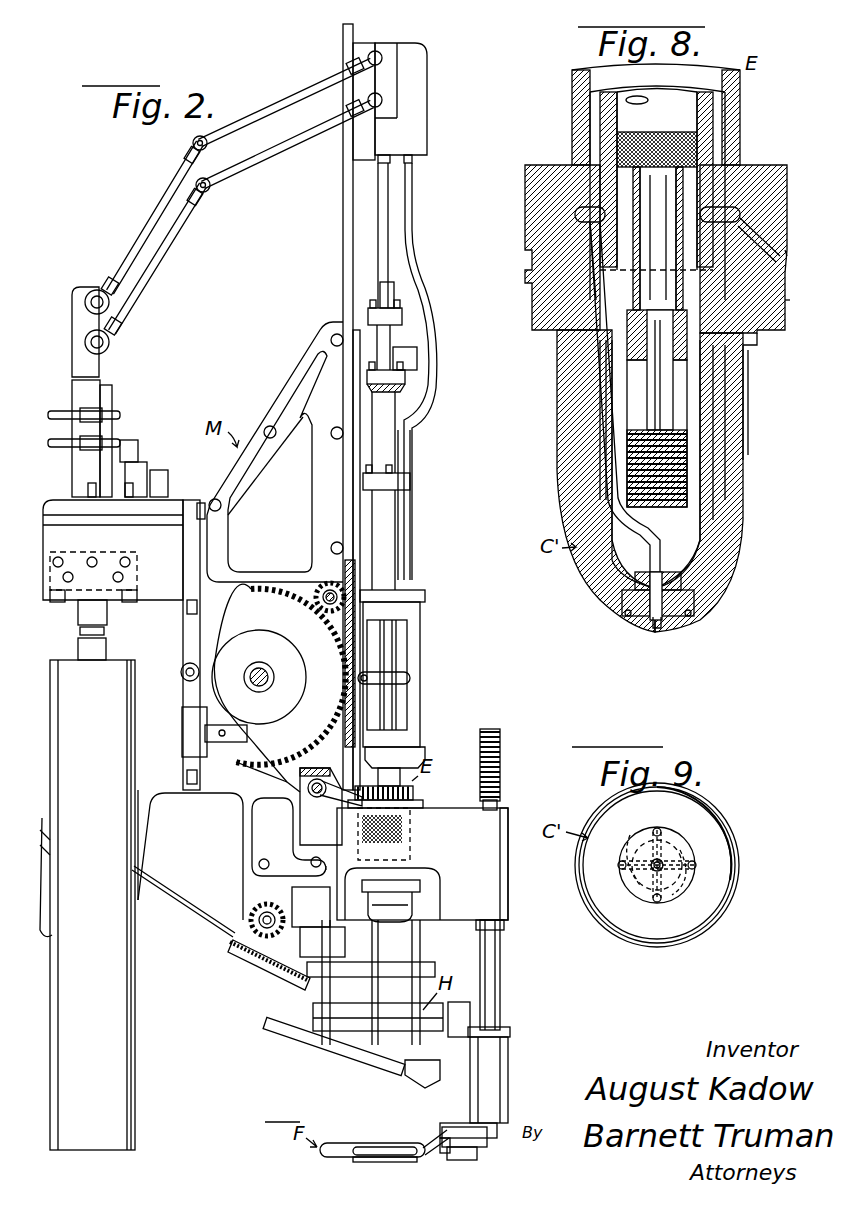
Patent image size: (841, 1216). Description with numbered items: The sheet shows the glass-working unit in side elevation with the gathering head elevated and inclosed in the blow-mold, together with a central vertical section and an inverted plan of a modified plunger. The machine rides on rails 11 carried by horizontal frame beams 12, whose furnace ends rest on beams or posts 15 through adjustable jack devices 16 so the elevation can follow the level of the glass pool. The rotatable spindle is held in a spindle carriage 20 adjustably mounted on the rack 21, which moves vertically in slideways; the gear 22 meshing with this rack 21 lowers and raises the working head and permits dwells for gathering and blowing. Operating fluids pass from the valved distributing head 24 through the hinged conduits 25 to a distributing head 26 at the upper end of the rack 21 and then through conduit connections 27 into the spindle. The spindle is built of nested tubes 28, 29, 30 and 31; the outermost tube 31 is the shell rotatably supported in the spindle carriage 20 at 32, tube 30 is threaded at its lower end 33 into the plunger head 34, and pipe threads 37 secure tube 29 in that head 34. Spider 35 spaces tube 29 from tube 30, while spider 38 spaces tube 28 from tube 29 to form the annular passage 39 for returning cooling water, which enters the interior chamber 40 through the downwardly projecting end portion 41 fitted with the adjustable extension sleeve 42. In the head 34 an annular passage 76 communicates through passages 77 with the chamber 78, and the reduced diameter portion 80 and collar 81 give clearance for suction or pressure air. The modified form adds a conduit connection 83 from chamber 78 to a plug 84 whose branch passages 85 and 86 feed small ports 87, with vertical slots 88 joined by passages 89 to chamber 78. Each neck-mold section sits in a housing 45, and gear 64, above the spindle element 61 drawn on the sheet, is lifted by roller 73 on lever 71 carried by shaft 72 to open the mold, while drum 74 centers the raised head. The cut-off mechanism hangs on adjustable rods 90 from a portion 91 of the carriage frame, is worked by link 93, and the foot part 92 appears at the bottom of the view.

In FIG. 2, the rails 11 is at (58, 500).
In FIG. 2, the horizontal frame beams 12 is at (170, 593).
In FIG. 2, the beams or posts 15 is at (124, 1083).
In FIG. 2, the adjustable jack devices 16 is at (78, 640).
In FIG. 2, the spindle carriage 20 is at (420, 700).
In FIG. 2, the rack 21 is at (343, 265).
In FIG. 2, the gear 22 is at (258, 595).
In FIG. 2, the valved distributing head 24 is at (100, 368).
In FIG. 2, the hinged conduits 25 is at (229, 206).
In FIG. 2, the distributing head 26 is at (428, 145).
In FIG. 2, the conduit connections 27 is at (420, 256).
In FIG. 8, the innermost tube 28 is at (640, 96).
In FIG. 8, the tube 29 is at (659, 72).
In FIG. 8, the tube 30 is at (742, 72).
In FIG. 2, the outermost tube 31 is at (400, 643).
In FIG. 2, the rotatable support 32 is at (415, 749).
In FIG. 8, the threaded lower end 33 is at (575, 181).
In FIG. 8, the plunger head 34 is at (760, 188).
In FIG. 8, the spider 35 is at (722, 100).
In FIG. 8, the pipe threads 37 is at (605, 230).
In FIG. 8, the spider 38 is at (700, 140).
In FIG. 8, the annular passage 39 is at (715, 118).
In FIG. 8, the interior chamber 40 is at (705, 540).
In FIG. 8, the downwardly projecting end portion 41 is at (683, 327).
In FIG. 8, the adjustable extension sleeve 42 is at (690, 505).
In FIG. 2, the cage or housing 45 is at (377, 913).
In FIG. 2, the gear 61 is at (414, 789).
In FIG. 2, the gear 64 is at (430, 800).
In FIG. 2, the lever 71 is at (328, 803).
In FIG. 2, the horizontal shaft 72 is at (308, 790).
In FIG. 2, the roller 73 is at (358, 812).
In FIG. 2, the cylindrical drum 74 is at (400, 870).
In FIG. 8, the annular passage 76 is at (786, 255).
In FIG. 8, the passages 77 is at (781, 242).
In FIG. 8, the chamber 78 is at (745, 214).
In FIG. 8, the reduced diameter portion 80 is at (786, 300).
In FIG. 8, the collar 81 is at (773, 345).
In FIG. 8, the conduit connection 83 is at (640, 546).
In FIG. 8, the plug 84 is at (635, 588).
In FIG. 8, the branch passage 85 is at (624, 612).
In FIG. 9, the branch passage 85 is at (647, 856).
In FIG. 8, the branch passage 86 is at (655, 624).
In FIG. 9, the branch passage 86 is at (652, 870).
In FIG. 8, the small ports 87 is at (646, 618).
In FIG. 9, the small ports 87 is at (662, 858).
In FIG. 8, the vertical slots 88 is at (745, 400).
In FIG. 8, the passage 89 is at (746, 366).
In FIG. 2, the adjustable rods or bolts 90 is at (498, 937).
In FIG. 2, the portion of the carriage frame 91 is at (508, 907).
In FIG. 2, the foot lever 92 is at (406, 1160).
In FIG. 2, the link 93 is at (344, 1052).